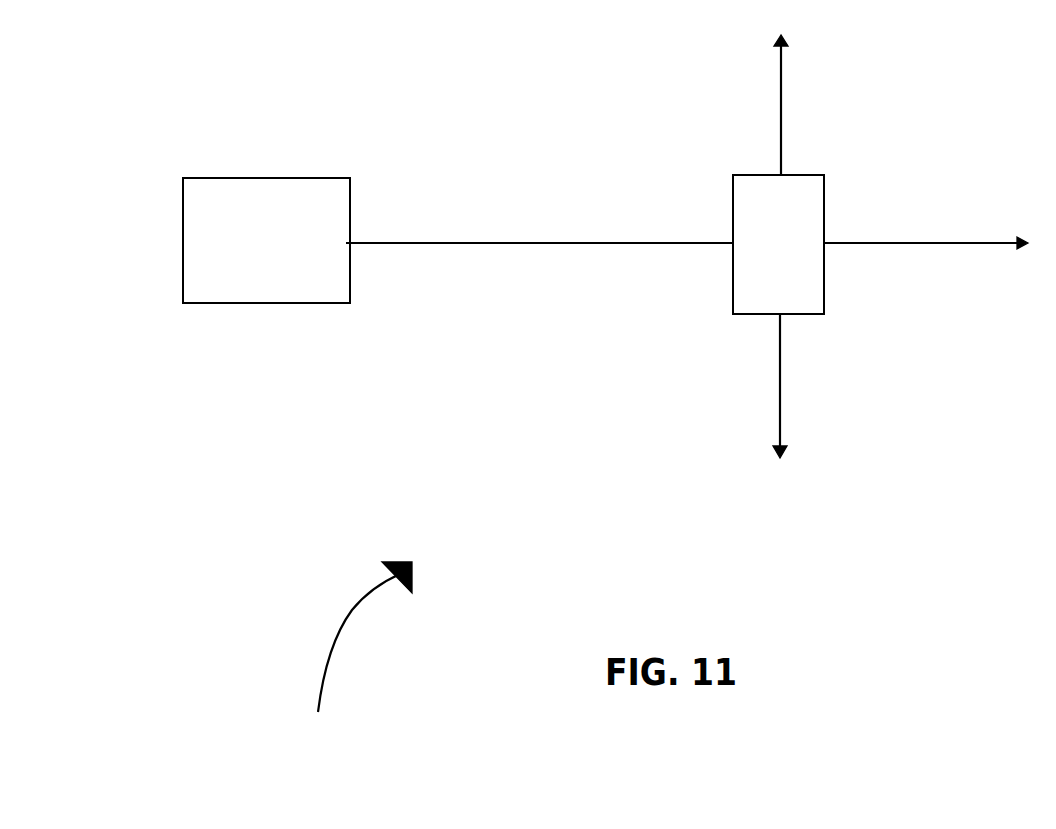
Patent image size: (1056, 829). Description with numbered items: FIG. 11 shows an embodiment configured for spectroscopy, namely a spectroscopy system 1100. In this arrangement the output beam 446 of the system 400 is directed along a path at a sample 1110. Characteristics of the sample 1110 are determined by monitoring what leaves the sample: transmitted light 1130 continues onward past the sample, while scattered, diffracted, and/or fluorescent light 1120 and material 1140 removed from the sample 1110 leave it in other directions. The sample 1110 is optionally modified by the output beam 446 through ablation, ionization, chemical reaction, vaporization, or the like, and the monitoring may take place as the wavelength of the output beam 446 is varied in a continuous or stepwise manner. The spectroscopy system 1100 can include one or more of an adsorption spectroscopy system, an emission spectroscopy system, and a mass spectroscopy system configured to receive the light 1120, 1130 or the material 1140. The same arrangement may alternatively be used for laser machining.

The spectroscopy system 1100 is at (347, 657).
The system 400 is at (273, 178).
The output beam 446 is at (395, 244).
The sample 1110 is at (737, 283).
The scattered, diffracted, and/or fluorescent light 1120 is at (781, 155).
The transmitted light 1130 is at (953, 243).
The material removed from sample 1140 is at (780, 383).